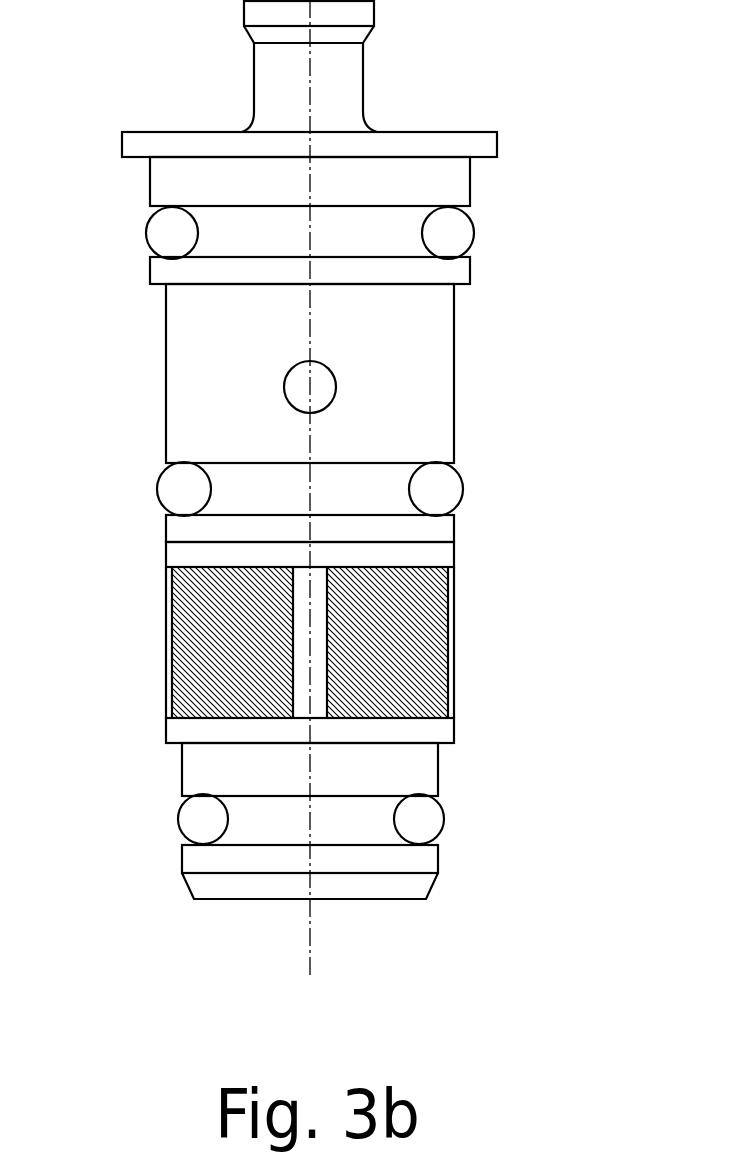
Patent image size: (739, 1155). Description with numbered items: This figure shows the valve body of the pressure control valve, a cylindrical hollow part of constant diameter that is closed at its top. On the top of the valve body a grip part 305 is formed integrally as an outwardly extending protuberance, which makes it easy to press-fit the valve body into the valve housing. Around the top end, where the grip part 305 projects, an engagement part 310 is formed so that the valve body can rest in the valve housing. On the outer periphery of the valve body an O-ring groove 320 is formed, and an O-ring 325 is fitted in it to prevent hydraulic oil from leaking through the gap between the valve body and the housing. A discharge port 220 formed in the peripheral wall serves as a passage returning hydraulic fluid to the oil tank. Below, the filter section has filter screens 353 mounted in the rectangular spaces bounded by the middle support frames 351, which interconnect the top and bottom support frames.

The grip part 305 is at (358, 70).
The engagement part 310 is at (497, 145).
The O-ring groove 320 is at (420, 233).
The O-ring 325 is at (460, 237).
The discharge port 220 is at (323, 388).
The middle support frame 351 is at (322, 700).
The filter screen 353 is at (423, 622).